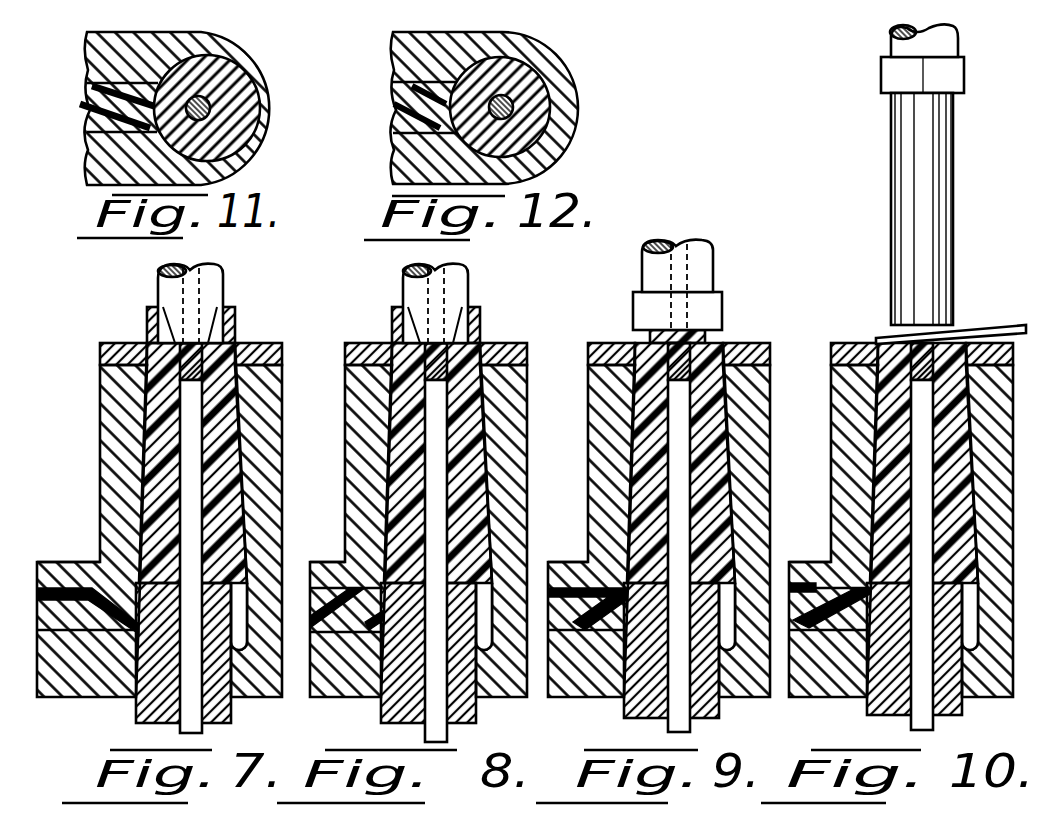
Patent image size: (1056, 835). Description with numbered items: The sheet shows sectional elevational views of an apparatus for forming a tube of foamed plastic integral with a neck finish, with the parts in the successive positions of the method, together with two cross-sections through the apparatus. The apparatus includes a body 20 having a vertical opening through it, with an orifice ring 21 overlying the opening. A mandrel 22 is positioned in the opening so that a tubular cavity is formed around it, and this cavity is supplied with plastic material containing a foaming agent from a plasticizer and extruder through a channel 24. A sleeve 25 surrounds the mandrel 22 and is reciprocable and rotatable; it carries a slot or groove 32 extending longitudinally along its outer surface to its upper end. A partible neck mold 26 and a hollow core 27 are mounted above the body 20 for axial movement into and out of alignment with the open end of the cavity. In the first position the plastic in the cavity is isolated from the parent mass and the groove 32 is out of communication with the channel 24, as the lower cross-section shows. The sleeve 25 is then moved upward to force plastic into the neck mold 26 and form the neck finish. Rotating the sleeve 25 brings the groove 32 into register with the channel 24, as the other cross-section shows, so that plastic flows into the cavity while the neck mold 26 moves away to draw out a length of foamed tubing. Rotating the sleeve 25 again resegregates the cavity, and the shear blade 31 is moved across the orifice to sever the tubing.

In FIG. 7, the body 20 is at (270, 484).
In FIG. 8, the body 20 is at (435, 531).
In FIG. 9, the body 20 is at (675, 531).
In FIG. 10, the body 20 is at (916, 531).
In FIG. 11, the body 20 is at (80, 150).
In FIG. 12, the body 20 is at (450, 42).
In FIG. 7, the orifice ring 21 is at (100, 358).
In FIG. 8, the orifice ring 21 is at (456, 354).
In FIG. 9, the orifice ring 21 is at (698, 352).
In FIG. 10, the orifice ring 21 is at (941, 354).
In FIG. 7, the mandrel 22 is at (172, 737).
In FIG. 8, the mandrel 22 is at (435, 503).
In FIG. 9, the mandrel 22 is at (683, 491).
In FIG. 10, the mandrel 22 is at (932, 383).
In FIG. 11, the mandrel 22 is at (210, 110).
In FIG. 12, the mandrel 22 is at (515, 92).
In FIG. 7, the channel 24 is at (50, 624).
In FIG. 8, the channel 24 is at (335, 613).
In FIG. 9, the channel 24 is at (581, 613).
In FIG. 10, the channel 24 is at (819, 605).
In FIG. 11, the channel 24 is at (72, 124).
In FIG. 12, the channel 24 is at (394, 128).
In FIG. 7, the sleeve 25 is at (242, 720).
In FIG. 8, the sleeve 25 is at (436, 533).
In FIG. 9, the sleeve 25 is at (692, 526).
In FIG. 10, the sleeve 25 is at (941, 534).
In FIG. 11, the sleeve 25 is at (258, 88).
In FIG. 12, the sleeve 25 is at (552, 142).
In FIG. 7, the partible neck mold 26 is at (236, 328).
In FIG. 8, the partible neck mold 26 is at (458, 319).
In FIG. 9, the partible neck mold 26 is at (696, 307).
In FIG. 10, the partible neck mold 26 is at (942, 75).
In FIG. 7, the hollow core 27 is at (180, 310).
In FIG. 8, the hollow core 27 is at (411, 313).
In FIG. 10, the shear blade 31 is at (954, 321).
In FIG. 7, the groove 32 is at (240, 612).
In FIG. 8, the groove 32 is at (423, 592).
In FIG. 9, the groove 32 is at (648, 583).
In FIG. 10, the groove 32 is at (1000, 616).
In FIG. 11, the groove 32 is at (82, 108).
In FIG. 12, the groove 32 is at (545, 106).